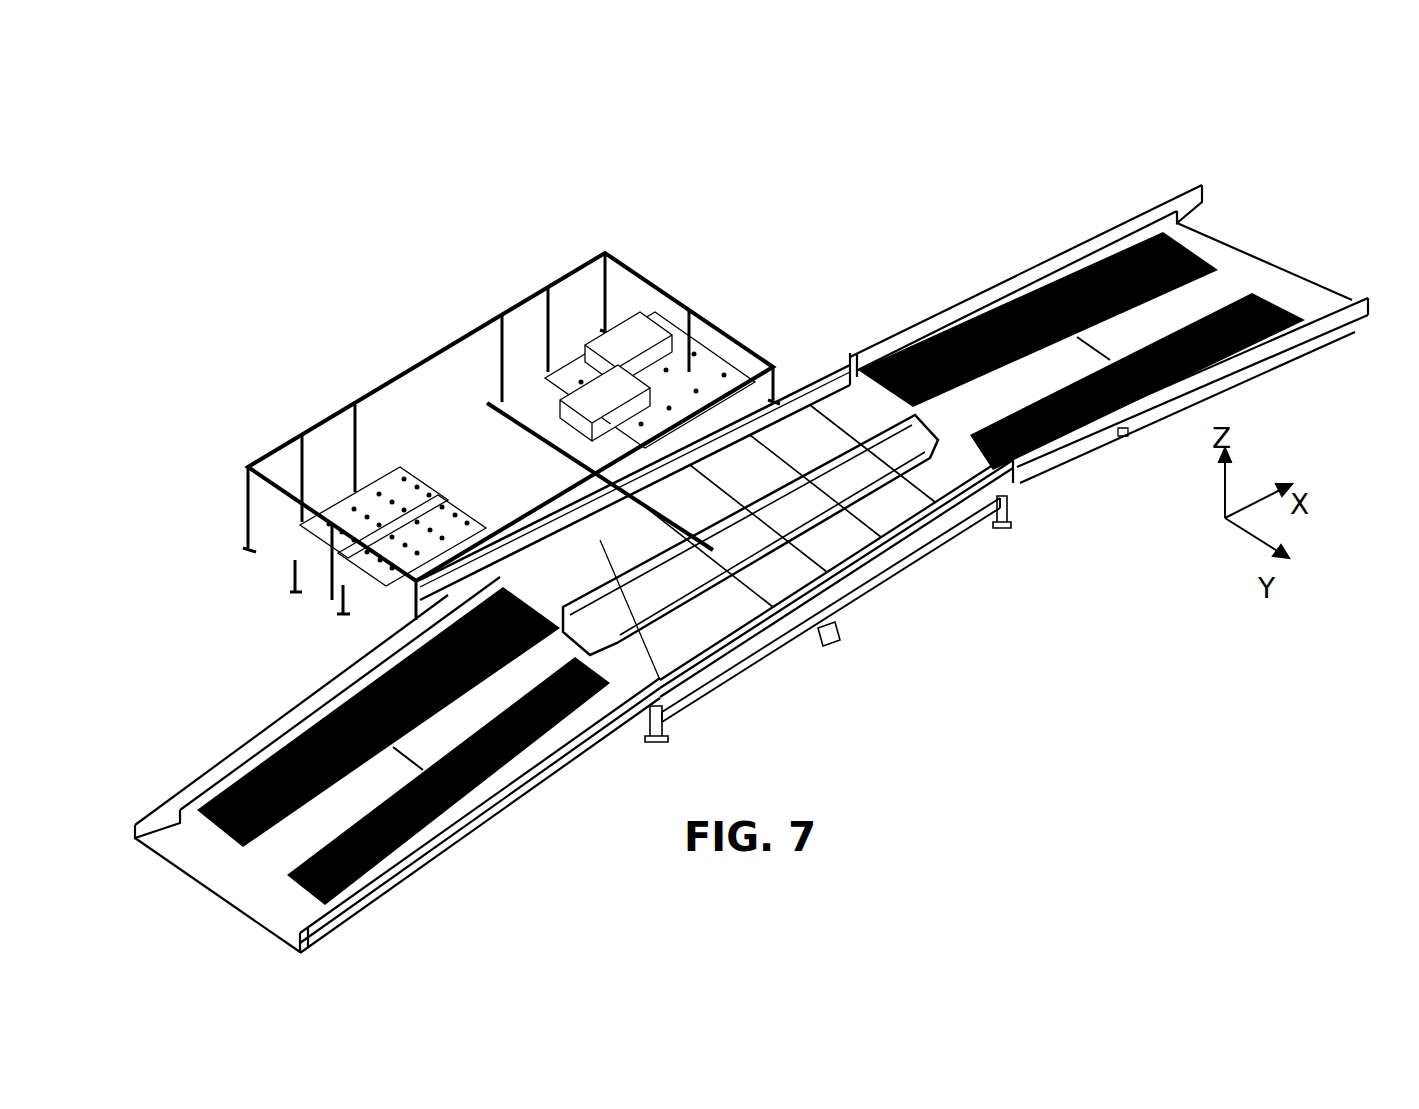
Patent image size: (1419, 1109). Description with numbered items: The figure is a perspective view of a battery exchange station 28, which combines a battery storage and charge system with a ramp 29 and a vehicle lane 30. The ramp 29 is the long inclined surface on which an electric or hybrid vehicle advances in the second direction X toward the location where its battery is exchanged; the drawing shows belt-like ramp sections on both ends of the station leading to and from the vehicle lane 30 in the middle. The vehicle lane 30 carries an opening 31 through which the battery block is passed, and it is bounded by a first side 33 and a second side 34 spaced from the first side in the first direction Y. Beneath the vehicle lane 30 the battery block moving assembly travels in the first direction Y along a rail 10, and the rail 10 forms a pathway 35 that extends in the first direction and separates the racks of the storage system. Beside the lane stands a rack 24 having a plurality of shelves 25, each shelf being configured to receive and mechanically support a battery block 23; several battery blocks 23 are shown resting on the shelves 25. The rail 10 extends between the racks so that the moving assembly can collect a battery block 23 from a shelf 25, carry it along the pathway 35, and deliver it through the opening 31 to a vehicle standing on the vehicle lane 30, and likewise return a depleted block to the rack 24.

The rail 10 is at (830, 640).
The battery block 23 is at (657, 357).
The rack 24 is at (605, 250).
The shelves 25 is at (332, 597).
The battery exchange station 28 is at (1255, 172).
The ramp 29 is at (278, 843).
The vehicle lane 30 is at (838, 550).
The opening 31 is at (662, 594).
The first side 33 is at (943, 522).
The second side 34 is at (822, 375).
The pathway 35 is at (755, 652).